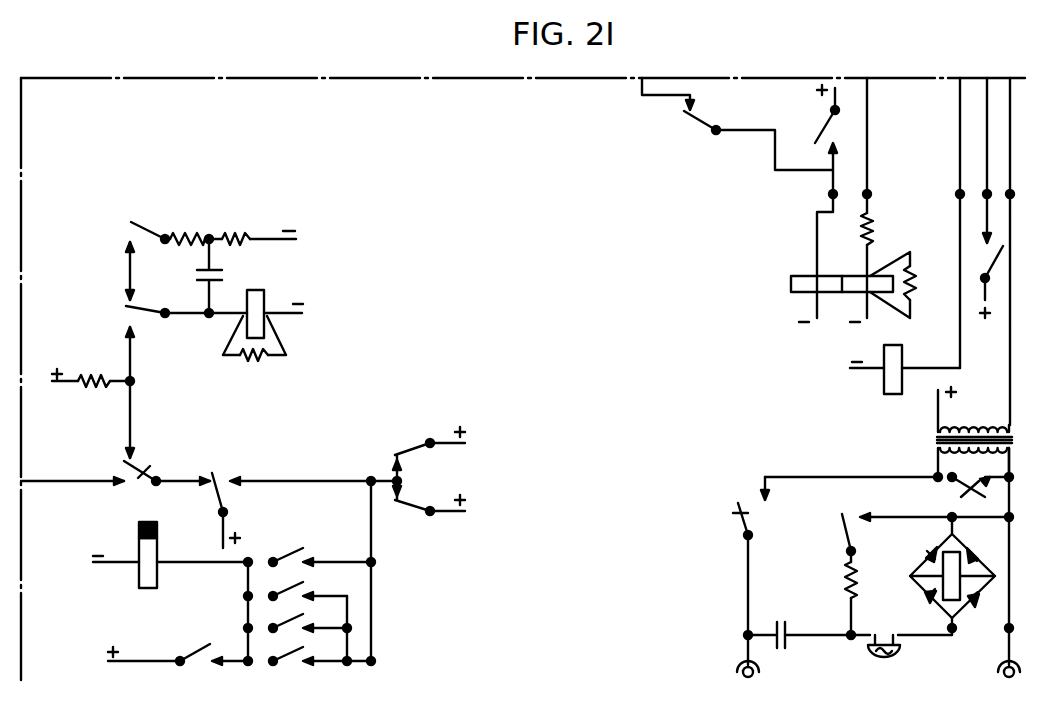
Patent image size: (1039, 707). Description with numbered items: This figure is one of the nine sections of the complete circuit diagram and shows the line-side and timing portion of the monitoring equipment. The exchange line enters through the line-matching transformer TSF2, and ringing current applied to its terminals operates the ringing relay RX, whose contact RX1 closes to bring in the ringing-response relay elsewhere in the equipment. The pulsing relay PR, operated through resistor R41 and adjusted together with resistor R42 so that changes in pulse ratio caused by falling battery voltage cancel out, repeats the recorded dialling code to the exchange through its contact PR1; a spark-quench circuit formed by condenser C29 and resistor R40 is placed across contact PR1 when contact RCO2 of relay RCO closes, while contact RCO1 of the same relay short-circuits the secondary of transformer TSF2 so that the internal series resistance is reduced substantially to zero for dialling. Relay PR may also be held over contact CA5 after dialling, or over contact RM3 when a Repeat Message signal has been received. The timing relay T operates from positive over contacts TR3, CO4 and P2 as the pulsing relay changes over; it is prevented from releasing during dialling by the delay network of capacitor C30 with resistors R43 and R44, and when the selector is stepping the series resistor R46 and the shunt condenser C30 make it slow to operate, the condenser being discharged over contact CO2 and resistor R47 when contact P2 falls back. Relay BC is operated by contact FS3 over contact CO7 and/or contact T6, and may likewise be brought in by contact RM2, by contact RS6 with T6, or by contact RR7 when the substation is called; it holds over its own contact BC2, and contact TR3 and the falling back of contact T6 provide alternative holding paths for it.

The contact CO2 is at (141, 236).
The resistor R47 is at (219, 224).
The resistor R43 is at (246, 237).
The capacitor C30 is at (222, 283).
The contact P2 is at (136, 318).
The relay T is at (258, 312).
The resistor R44 is at (268, 357).
The resistor R46 is at (91, 363).
The contact CO4 is at (161, 462).
The contact TR3 is at (222, 480).
The contact CO7 is at (418, 440).
The contact T6 is at (410, 502).
The relay BC is at (148, 572).
The contact BC2 is at (312, 543).
The contact FS3 is at (298, 589).
The contact RM2 is at (300, 622).
The contact RS6 is at (300, 655).
The contact RR7 is at (200, 657).
The contact CA5 is at (699, 124).
The contact RM3 is at (828, 131).
The resistor R41 is at (872, 241).
The relay PR is at (797, 288).
The resistor R42 is at (916, 292).
The relay RCO is at (884, 352).
The contact RX1 is at (998, 258).
The line-matching transformer TSF2 is at (928, 443).
The contact RCO1 is at (946, 489).
The contact PR1 is at (738, 507).
The condenser C29 is at (803, 616).
The contact RCO2 is at (856, 505).
The resistor R40 is at (858, 576).
The ringing relay RX is at (940, 548).